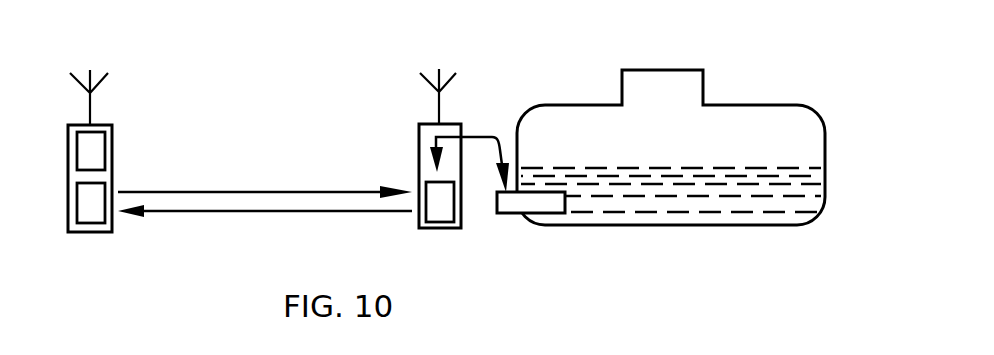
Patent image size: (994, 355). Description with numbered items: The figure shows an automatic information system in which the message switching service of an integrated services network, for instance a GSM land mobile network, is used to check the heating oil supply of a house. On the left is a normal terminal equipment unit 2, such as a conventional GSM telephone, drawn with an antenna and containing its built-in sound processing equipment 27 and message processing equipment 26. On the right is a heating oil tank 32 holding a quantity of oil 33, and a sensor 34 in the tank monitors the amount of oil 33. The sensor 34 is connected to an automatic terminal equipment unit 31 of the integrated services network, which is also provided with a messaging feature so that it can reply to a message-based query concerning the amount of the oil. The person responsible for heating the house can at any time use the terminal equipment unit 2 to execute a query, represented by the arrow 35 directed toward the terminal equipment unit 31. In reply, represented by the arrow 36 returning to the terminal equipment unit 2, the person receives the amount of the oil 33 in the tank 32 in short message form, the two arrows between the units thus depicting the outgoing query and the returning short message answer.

The terminal equipment unit 2 is at (112, 167).
The sound processing equipment 27 is at (105, 140).
The message processing equipment 26 is at (93, 223).
The query 35 is at (268, 190).
The reply 36 is at (300, 212).
The terminal equipment unit 31 is at (427, 130).
The heating oil tank 32 is at (648, 125).
The oil 33 is at (697, 212).
The sensor 34 is at (520, 213).